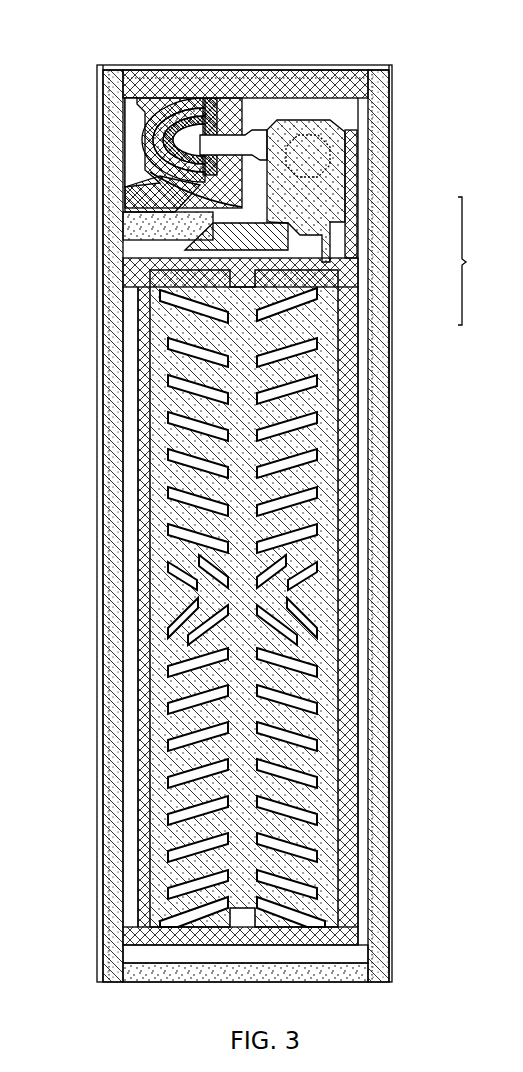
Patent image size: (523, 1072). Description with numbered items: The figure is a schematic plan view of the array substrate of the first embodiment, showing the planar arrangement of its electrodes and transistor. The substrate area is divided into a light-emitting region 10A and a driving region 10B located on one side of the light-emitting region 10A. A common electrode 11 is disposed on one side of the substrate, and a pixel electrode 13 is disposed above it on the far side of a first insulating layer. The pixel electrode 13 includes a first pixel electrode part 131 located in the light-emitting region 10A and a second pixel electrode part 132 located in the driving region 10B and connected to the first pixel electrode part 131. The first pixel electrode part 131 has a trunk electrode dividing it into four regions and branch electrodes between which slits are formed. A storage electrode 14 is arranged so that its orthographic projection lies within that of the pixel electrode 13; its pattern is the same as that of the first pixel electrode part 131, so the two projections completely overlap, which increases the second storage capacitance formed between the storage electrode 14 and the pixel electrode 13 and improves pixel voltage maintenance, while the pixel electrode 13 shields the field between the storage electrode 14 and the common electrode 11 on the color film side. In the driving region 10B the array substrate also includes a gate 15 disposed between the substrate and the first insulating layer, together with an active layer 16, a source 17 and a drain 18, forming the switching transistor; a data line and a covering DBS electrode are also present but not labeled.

The light-emitting region 10A is at (136, 324).
The driving region 10B is at (134, 157).
The common electrode 11 is at (348, 421).
The pixel electrode 13 is at (474, 261).
The first pixel electrode part 131 is at (317, 325).
The second pixel electrode part 132 is at (337, 203).
The storage electrode 14 is at (317, 363).
The gate 15 is at (152, 125).
The active layer 16 is at (162, 98).
The source 17 is at (200, 97).
The drain 18 is at (257, 133).